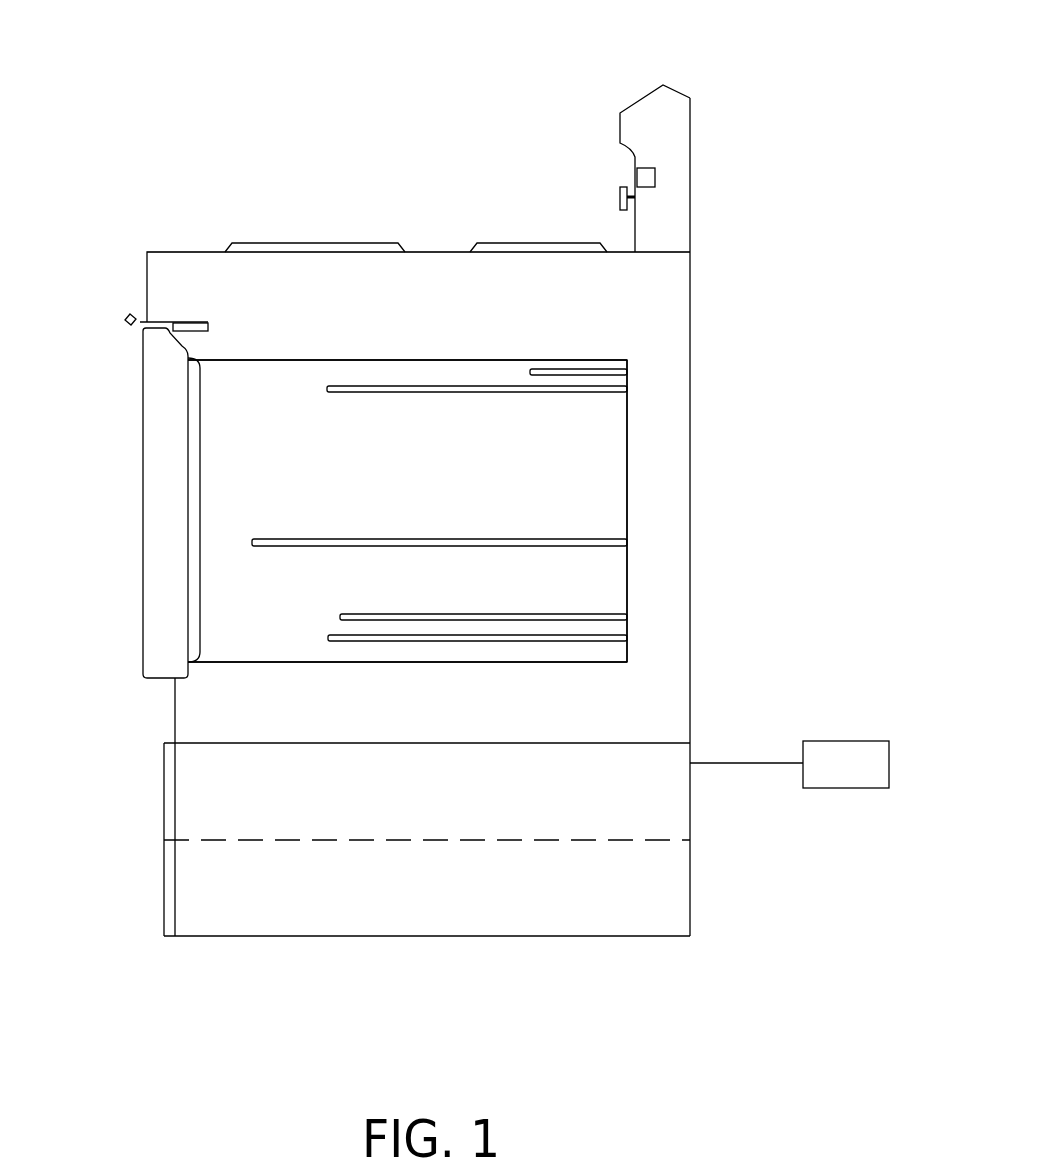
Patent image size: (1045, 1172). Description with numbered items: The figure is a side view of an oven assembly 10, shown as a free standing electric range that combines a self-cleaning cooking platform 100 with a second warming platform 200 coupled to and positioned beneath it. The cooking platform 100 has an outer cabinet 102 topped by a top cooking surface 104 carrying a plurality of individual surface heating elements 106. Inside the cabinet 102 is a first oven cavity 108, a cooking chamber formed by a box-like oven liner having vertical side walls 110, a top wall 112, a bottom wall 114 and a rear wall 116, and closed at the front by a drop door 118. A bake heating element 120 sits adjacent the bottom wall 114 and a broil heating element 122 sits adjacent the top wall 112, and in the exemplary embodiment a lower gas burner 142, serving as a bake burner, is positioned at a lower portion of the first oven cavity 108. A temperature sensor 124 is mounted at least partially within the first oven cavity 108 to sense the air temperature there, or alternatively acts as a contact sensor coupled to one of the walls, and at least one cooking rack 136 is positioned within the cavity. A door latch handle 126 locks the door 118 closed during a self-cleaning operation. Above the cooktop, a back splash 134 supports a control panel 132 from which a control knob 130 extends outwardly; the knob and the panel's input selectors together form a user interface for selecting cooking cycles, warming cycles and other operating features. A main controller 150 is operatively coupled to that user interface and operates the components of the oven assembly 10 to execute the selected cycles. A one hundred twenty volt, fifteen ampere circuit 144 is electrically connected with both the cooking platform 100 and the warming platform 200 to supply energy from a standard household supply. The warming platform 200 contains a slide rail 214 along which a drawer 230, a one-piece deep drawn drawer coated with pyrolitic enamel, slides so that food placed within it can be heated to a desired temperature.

The oven assembly 10 is at (680, 54).
The self-cleaning cooking platform 100 is at (230, 56).
The outer cabinet 102 is at (691, 283).
The top cooking surface 104 is at (420, 251).
The surface heating elements 106 is at (312, 242).
The first oven cavity 108 is at (435, 468).
The vertical side walls 110 is at (600, 577).
The top wall 112 is at (463, 357).
The bottom wall 114 is at (537, 663).
The rear wall 116 is at (625, 475).
The front opening drop door 118 is at (136, 520).
The bake heating element 120 is at (432, 613).
The broil heating element 122 is at (590, 392).
The temperature sensor 124 is at (613, 367).
The door latch handle 126 is at (124, 317).
The control knob 130 is at (618, 200).
The control panel 132 is at (633, 176).
The back splash 134 is at (634, 166).
The cooking rack 136 is at (298, 538).
The lower gas burner 142 is at (607, 642).
The 120 volt, 15 ampere circuit 144 is at (848, 741).
The main controller 150 is at (656, 174).
The warming platform 200 is at (437, 908).
The slide rail 214 is at (485, 838).
The drawer 230 is at (164, 858).